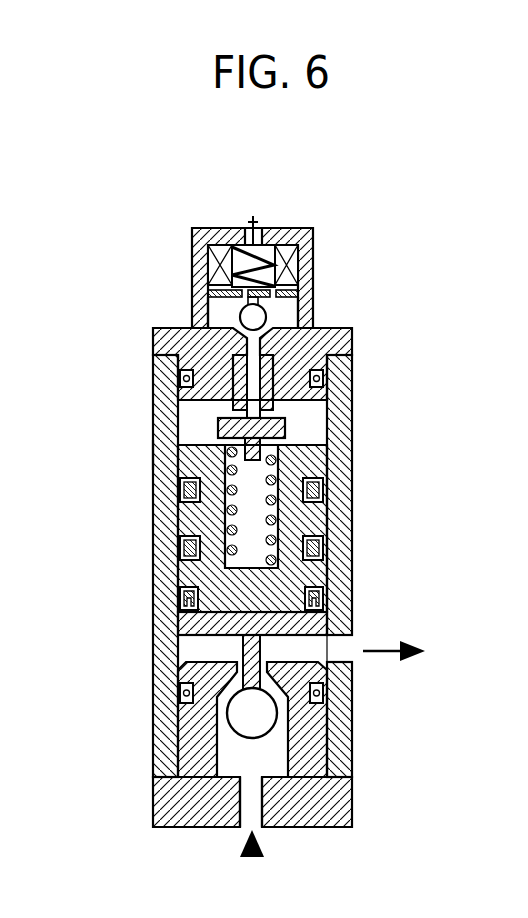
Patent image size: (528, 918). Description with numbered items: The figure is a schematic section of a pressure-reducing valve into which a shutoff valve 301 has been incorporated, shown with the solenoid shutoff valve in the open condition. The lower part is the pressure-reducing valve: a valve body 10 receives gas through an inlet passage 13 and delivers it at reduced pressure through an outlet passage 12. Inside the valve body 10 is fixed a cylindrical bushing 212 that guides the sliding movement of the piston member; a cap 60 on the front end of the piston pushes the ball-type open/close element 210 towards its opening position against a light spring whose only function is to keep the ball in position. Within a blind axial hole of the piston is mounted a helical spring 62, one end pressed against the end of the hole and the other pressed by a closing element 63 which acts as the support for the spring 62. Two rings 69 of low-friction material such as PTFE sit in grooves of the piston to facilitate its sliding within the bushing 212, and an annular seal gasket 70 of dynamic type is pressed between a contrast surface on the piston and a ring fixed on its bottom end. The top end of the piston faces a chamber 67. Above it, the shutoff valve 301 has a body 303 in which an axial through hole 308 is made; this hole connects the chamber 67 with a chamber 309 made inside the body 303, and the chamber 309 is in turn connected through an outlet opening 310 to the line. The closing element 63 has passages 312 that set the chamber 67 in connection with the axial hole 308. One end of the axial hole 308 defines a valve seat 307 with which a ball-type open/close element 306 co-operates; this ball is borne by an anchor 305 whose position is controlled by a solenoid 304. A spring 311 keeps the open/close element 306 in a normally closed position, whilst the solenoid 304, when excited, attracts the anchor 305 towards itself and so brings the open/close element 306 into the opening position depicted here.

The shutoff valve 301 is at (181, 208).
The outlet opening 310 is at (256, 222).
The solenoid 304 is at (314, 230).
The spring 311 is at (300, 266).
The anchor 305 is at (192, 304).
The chamber 309 is at (300, 307).
The valve seat 307 is at (193, 312).
The ball-type open/close element 306 is at (300, 314).
The body 303 is at (167, 340).
The axial through hole 308 is at (275, 400).
The passages 312 is at (275, 412).
The chamber 67 is at (207, 420).
The closing element 63 is at (287, 430).
The cylindrical bushing 212 is at (163, 450).
The rings 69 is at (185, 543).
The helical spring 62 is at (298, 516).
The annular seal gasket 70 is at (303, 588).
The cap 60 is at (215, 652).
The outlet passage 12 is at (327, 660).
The valve body 10 is at (364, 792).
The ball-type open/close element 210 is at (205, 763).
The inlet passage 13 is at (258, 800).